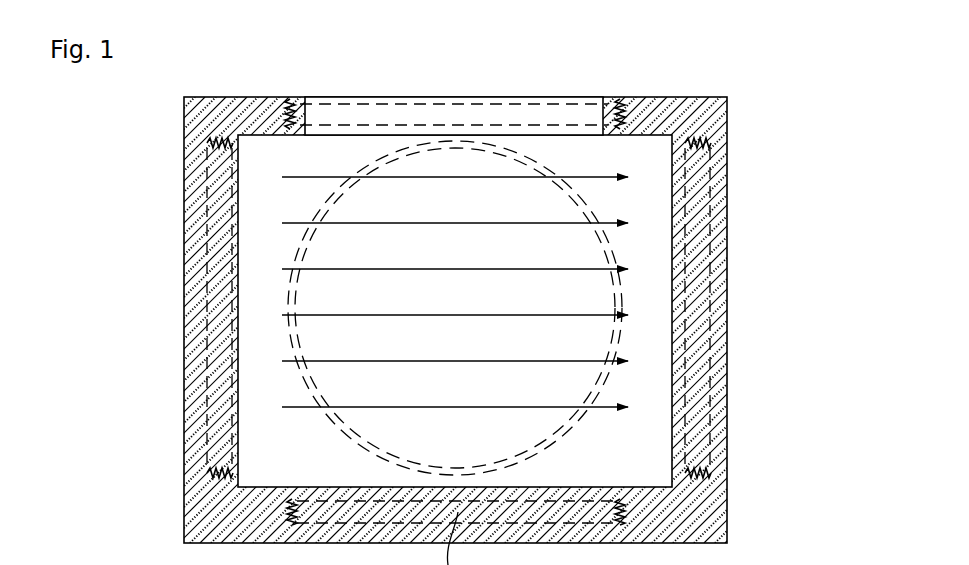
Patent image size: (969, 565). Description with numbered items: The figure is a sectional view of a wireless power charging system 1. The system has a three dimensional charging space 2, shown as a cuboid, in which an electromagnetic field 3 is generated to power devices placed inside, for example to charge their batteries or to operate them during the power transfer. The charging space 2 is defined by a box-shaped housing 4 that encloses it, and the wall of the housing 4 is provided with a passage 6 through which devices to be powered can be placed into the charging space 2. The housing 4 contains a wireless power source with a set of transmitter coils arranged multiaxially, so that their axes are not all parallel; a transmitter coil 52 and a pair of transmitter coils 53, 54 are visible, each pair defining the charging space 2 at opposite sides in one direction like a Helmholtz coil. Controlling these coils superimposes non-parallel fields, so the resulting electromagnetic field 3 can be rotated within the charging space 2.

The wireless power charging system 1 is at (765, 465).
The three dimensional charging space 2 is at (299, 170).
The electromagnetic field 3 is at (622, 148).
The housing 4 is at (663, 100).
The passage 6 is at (511, 112).
The transmitter coil 52 is at (299, 102).
The transmitter coil 53 is at (710, 300).
The transmitter coil 54 is at (217, 310).